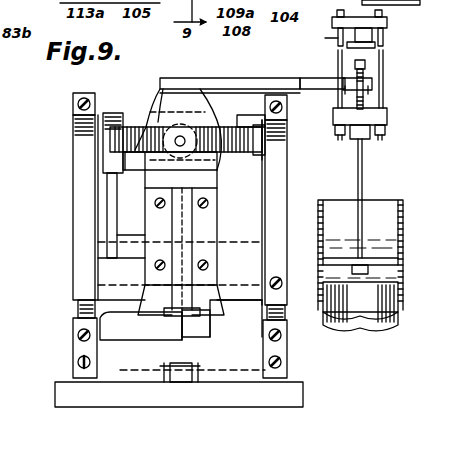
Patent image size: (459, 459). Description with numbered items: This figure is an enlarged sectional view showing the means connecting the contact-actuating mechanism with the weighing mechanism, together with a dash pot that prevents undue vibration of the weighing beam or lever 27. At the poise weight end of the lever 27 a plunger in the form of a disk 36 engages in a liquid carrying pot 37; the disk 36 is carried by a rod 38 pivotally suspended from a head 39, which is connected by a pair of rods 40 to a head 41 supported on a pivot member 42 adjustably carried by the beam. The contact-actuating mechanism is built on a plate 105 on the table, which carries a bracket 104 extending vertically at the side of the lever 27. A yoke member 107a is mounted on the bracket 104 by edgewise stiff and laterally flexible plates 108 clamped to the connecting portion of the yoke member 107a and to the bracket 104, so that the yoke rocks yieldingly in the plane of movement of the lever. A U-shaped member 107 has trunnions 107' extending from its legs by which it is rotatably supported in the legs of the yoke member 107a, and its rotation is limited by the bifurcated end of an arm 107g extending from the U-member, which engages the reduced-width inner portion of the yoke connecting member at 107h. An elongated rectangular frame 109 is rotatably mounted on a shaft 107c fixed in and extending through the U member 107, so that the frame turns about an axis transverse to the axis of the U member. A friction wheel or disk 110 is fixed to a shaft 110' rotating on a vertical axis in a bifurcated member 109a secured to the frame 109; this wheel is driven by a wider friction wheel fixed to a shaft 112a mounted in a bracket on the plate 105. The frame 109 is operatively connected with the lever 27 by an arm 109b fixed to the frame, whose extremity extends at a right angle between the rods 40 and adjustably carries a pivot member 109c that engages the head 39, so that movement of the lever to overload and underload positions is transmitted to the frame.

The plate 105 is at (62, 393).
The yoke member 107a is at (80, 228).
The trunnions 107' is at (66, 143).
The arm 107g is at (107, 192).
The frame 109 is at (145, 205).
The reduced-width portion of yoke connecting member 107h is at (125, 258).
The edgewise stiff and laterally flexible plates 108 is at (80, 306).
The shaft 112a is at (168, 300).
The bifurcated member 109a is at (200, 298).
The bracket 104 is at (216, 370).
The shaft 110' is at (248, 246).
The arm 109b is at (288, 78).
The pivot member 109c is at (336, 89).
The U-shaped member 107 is at (183, 109).
The shaft 107c is at (152, 108).
The friction wheel or disk 110 is at (187, 131).
The head 41 is at (378, 24).
The pivot member 42 is at (380, 36).
The weighing beam or lever 27 is at (330, 38).
The rods 40 is at (366, 74).
The head 39 is at (370, 118).
The rod 38 is at (361, 172).
The disk 36 is at (377, 262).
The liquid carrying pot 37 is at (362, 298).